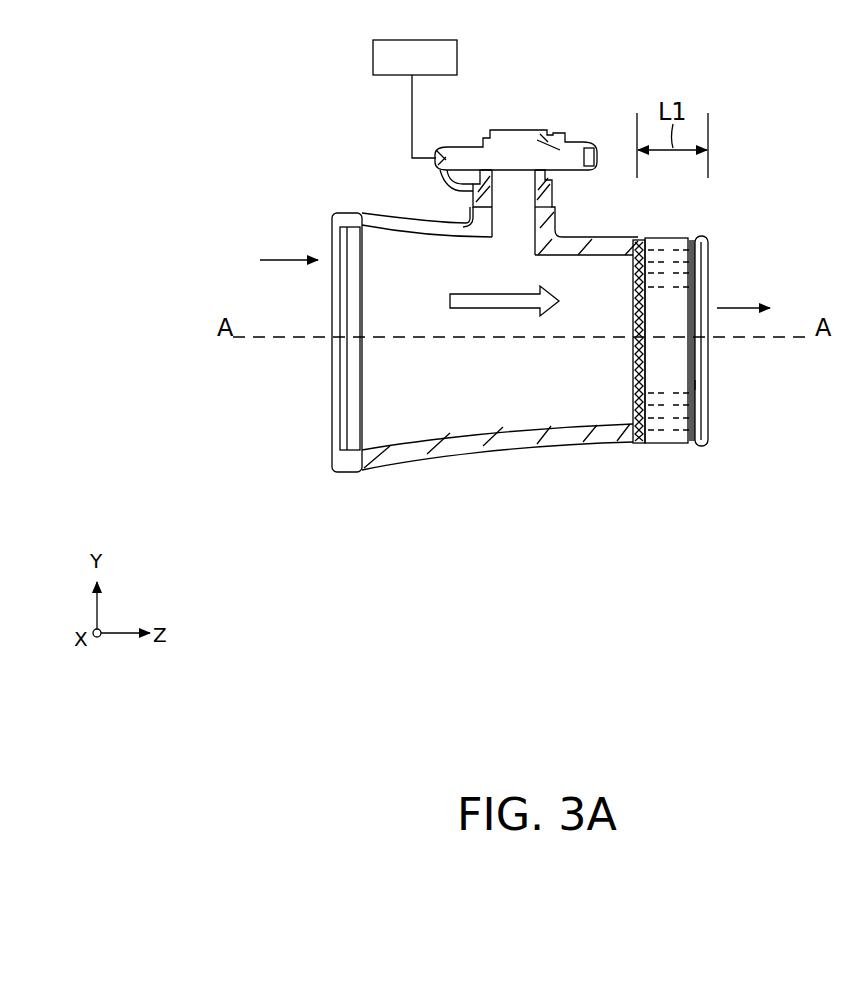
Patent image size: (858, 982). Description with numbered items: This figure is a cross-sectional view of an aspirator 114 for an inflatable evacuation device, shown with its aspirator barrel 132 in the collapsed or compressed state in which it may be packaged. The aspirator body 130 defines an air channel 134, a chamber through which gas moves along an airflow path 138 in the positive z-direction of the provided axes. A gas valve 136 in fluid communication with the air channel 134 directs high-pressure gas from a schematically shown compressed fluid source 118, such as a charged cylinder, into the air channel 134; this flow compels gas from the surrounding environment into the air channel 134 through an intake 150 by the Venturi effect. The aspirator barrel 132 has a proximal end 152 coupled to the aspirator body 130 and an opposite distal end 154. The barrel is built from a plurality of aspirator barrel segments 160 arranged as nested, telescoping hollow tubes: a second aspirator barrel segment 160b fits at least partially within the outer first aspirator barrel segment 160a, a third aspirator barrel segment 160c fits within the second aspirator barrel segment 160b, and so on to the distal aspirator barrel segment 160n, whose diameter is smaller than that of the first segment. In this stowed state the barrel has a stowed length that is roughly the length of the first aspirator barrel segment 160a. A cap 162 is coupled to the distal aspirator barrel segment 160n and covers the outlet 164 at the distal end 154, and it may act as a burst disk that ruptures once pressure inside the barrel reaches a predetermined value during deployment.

The aspirator 114 is at (290, 148).
The compressed fluid source 118 is at (415, 99).
The aspirator body 130 is at (408, 218).
The aspirator barrel 132 is at (668, 238).
The air channel 134 is at (460, 392).
The gas valve 136 is at (522, 132).
The airflow path 138 is at (485, 294).
The intake 150 is at (264, 260).
The proximal end 152 is at (633, 435).
The distal end 154 is at (713, 386).
The aspirator barrel segments 160 is at (698, 468).
The first aspirator barrel segment 160a is at (652, 433).
The second aspirator barrel segment 160b is at (660, 433).
The third aspirator barrel segment 160c is at (667, 422).
The distal aspirator barrel segment 160n is at (727, 415).
The cap 162 is at (703, 257).
The outlet 164 is at (768, 310).